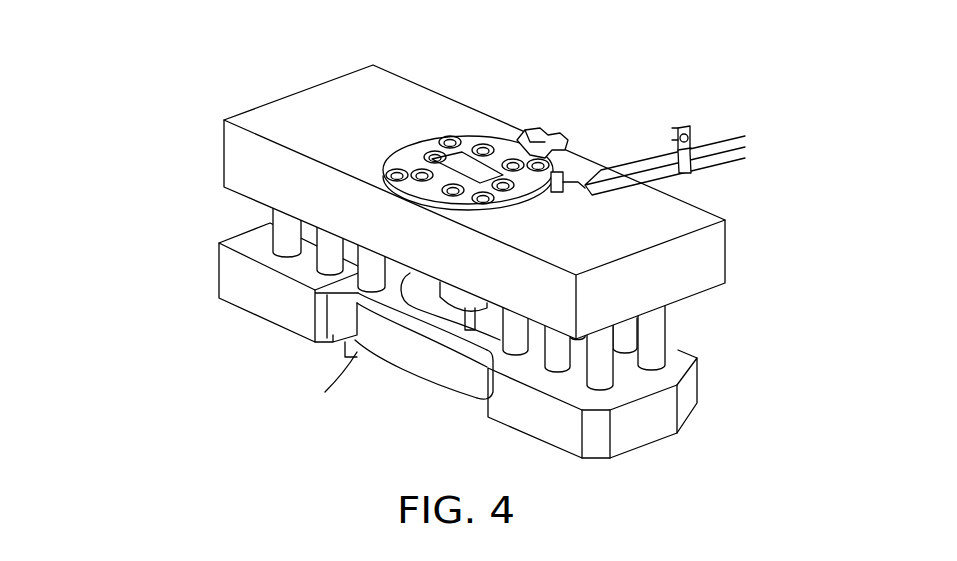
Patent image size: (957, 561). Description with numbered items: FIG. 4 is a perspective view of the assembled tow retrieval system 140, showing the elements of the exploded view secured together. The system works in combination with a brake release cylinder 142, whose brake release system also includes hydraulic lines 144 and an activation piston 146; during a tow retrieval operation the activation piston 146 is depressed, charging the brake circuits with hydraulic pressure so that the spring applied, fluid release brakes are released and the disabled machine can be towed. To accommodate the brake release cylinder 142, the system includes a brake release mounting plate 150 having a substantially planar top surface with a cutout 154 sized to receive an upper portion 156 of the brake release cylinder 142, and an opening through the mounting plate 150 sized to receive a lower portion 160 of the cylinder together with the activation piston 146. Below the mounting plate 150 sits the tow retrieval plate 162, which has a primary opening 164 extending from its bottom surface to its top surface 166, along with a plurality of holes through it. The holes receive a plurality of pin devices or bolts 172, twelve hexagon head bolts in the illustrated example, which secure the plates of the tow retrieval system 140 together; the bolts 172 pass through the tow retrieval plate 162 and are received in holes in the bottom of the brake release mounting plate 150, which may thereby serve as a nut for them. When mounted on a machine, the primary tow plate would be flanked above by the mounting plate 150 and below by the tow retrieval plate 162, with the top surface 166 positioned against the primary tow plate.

The tow retrieval system 140 is at (126, 67).
The brake release cylinder 142 is at (510, 150).
The hydraulic lines 144 is at (723, 142).
The activation piston 146 is at (470, 305).
The brake release mounting plate 150 is at (224, 156).
The cutout 154 is at (545, 178).
The upper portion 156 is at (495, 205).
The lower portion 160 is at (438, 287).
The tow retrieval plate 162 is at (219, 274).
The primary opening 164 is at (405, 365).
The top surface 166 is at (642, 383).
The bolts 172 is at (323, 343).